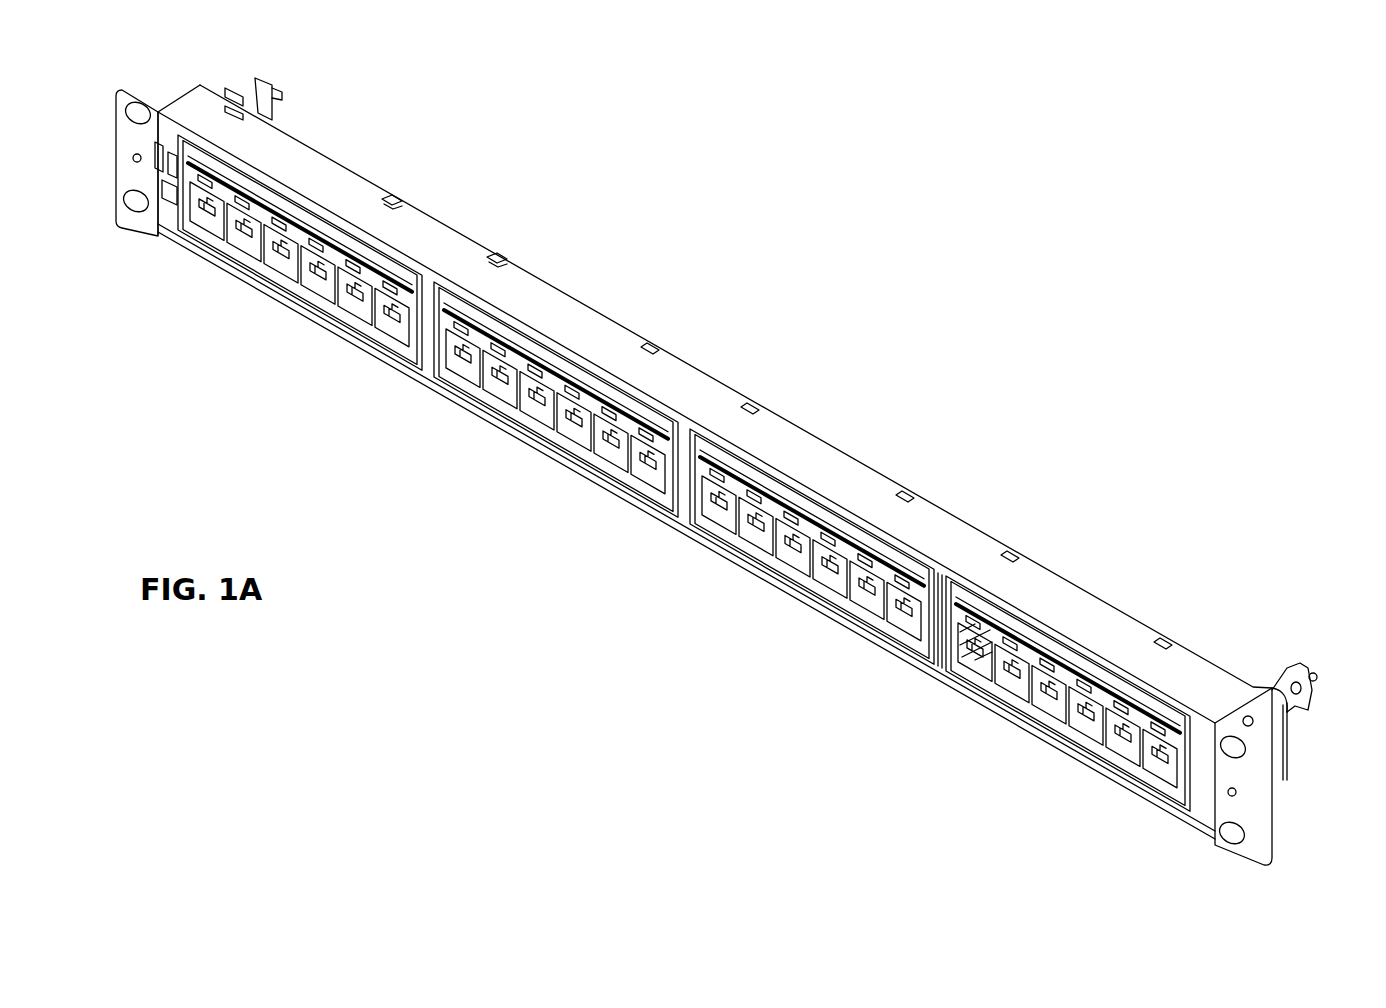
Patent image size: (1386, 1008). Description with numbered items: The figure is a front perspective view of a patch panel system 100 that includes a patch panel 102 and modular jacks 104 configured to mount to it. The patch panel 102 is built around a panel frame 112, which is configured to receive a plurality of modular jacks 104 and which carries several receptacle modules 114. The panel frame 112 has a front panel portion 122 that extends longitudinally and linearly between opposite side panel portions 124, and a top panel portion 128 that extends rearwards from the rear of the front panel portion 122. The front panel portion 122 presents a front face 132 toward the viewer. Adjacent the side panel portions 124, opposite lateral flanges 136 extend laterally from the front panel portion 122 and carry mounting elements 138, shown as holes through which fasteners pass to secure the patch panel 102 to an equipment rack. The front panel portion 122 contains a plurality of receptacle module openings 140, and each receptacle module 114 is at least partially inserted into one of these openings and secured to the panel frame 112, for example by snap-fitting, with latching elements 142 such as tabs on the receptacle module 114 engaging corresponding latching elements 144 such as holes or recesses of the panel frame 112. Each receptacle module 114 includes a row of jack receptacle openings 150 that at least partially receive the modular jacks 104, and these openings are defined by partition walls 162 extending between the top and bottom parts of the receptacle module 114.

The patch panel system 100 is at (1122, 172).
The patch panel 102 is at (1006, 357).
The modular jack 104 is at (985, 670).
The panel frame 112 is at (1213, 684).
The receptacle module 114 is at (370, 332).
The front panel portion 122 is at (944, 594).
The side panel portion 124 is at (1263, 722).
The top panel portion 128 is at (699, 392).
The front face 132 is at (946, 610).
The lateral flange 136 is at (126, 141).
The mounting element 138 is at (141, 108).
The receptacle module opening 140 is at (413, 352).
The latching element 142 is at (393, 196).
The latching element 144 is at (399, 204).
The jack receptacle opening 150 is at (807, 543).
The partition wall 162 is at (563, 417).